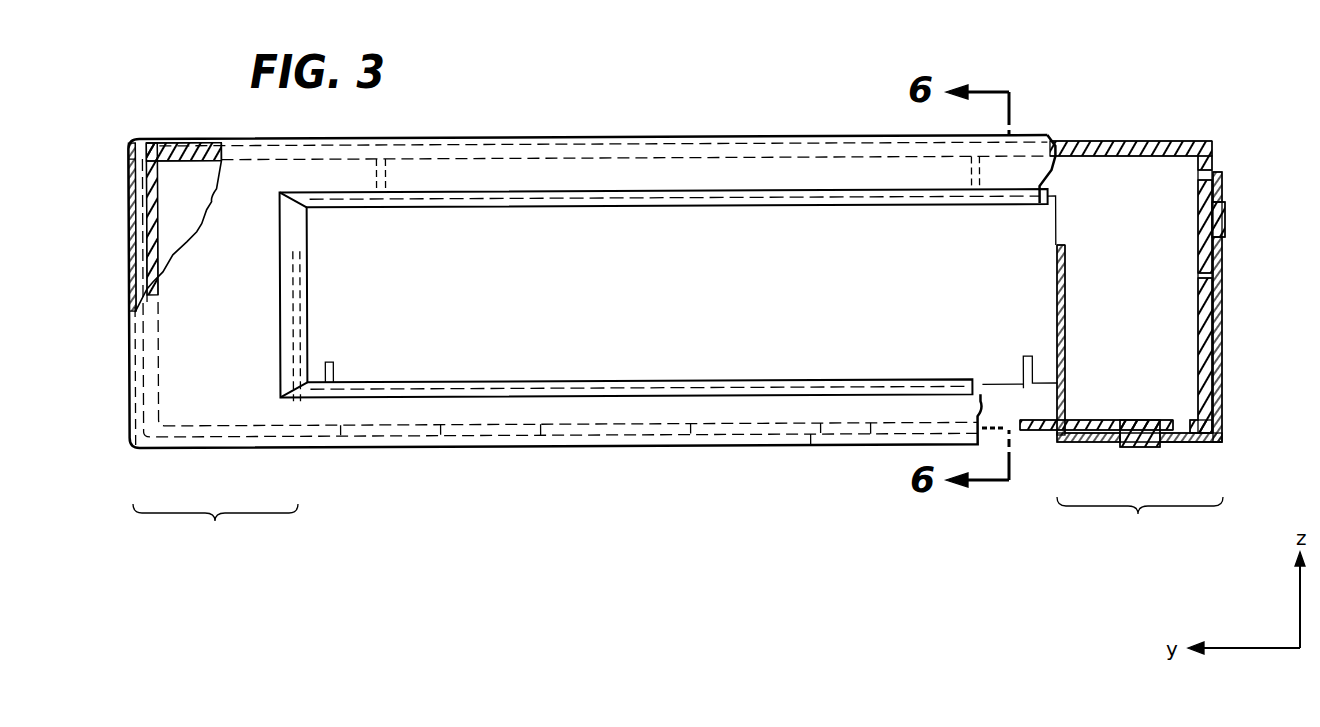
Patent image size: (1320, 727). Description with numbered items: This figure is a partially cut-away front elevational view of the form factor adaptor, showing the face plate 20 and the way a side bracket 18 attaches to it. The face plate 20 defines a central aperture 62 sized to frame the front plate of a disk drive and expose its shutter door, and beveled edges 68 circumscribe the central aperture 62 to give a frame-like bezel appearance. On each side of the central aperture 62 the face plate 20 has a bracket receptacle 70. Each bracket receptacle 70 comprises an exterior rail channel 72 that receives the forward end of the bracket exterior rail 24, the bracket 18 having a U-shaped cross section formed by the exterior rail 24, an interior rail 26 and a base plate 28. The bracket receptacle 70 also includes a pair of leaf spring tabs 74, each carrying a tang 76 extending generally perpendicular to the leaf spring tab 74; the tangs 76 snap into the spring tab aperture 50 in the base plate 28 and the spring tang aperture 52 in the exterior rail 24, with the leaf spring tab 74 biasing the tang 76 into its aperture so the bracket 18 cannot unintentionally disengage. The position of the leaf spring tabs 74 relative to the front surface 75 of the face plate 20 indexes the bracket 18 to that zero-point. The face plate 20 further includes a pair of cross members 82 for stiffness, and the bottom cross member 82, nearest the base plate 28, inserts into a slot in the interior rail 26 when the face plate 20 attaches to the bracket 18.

The side bracket 18 is at (1222, 421).
The face plate 20 is at (508, 452).
The exterior rail 24 is at (140, 193).
The interior rail 26 is at (1065, 320).
The base plate 28 is at (1187, 443).
The spring tab aperture 50 is at (1115, 443).
The spring tang aperture 52 is at (1221, 235).
The central aperture 62 is at (658, 342).
The beveled edges 68 is at (293, 226).
The bracket receptacle 70 is at (678, 526).
The exterior rail channel 72 is at (135, 160).
The leaf spring tab 74 is at (1200, 217).
The front surface 75 is at (185, 343).
The tang 76 is at (1225, 215).
The cross member 82 is at (1124, 140).